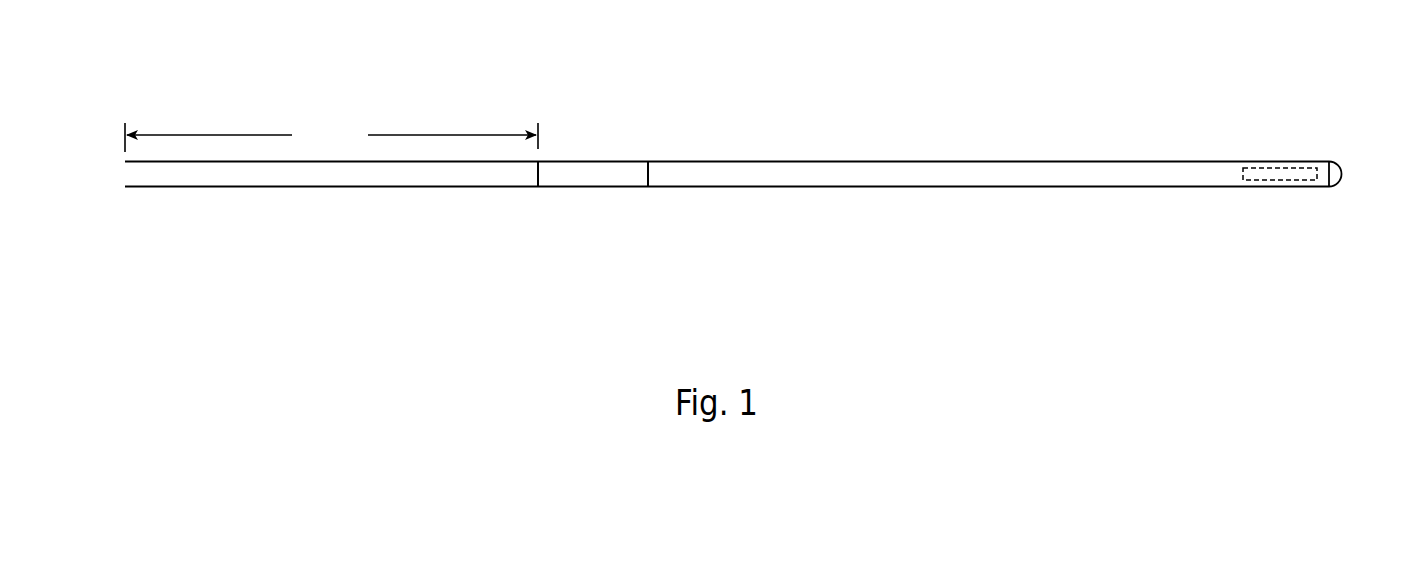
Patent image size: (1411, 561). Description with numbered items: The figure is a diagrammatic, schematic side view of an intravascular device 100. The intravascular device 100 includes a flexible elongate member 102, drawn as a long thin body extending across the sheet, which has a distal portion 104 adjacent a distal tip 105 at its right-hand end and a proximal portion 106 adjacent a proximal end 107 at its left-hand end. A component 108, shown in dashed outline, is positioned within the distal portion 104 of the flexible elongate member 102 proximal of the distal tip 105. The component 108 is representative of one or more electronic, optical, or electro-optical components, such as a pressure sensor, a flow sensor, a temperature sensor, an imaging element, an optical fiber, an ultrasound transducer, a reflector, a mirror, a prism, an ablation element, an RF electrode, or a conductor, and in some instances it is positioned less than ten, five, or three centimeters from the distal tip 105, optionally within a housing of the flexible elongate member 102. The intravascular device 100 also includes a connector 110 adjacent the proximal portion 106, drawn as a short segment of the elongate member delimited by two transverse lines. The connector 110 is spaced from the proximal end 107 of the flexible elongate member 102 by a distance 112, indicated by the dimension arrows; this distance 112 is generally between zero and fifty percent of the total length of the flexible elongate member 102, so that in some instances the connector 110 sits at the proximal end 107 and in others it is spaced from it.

The intravascular device 100 is at (907, 129).
The flexible elongate member 102 is at (1022, 187).
The distal portion 104 is at (1284, 209).
The distal tip 105 is at (1341, 167).
The proximal portion 106 is at (212, 201).
The proximal end 107 is at (125, 172).
The component 108 is at (1275, 168).
The connector 110 is at (594, 157).
The distance 112 is at (331, 137).